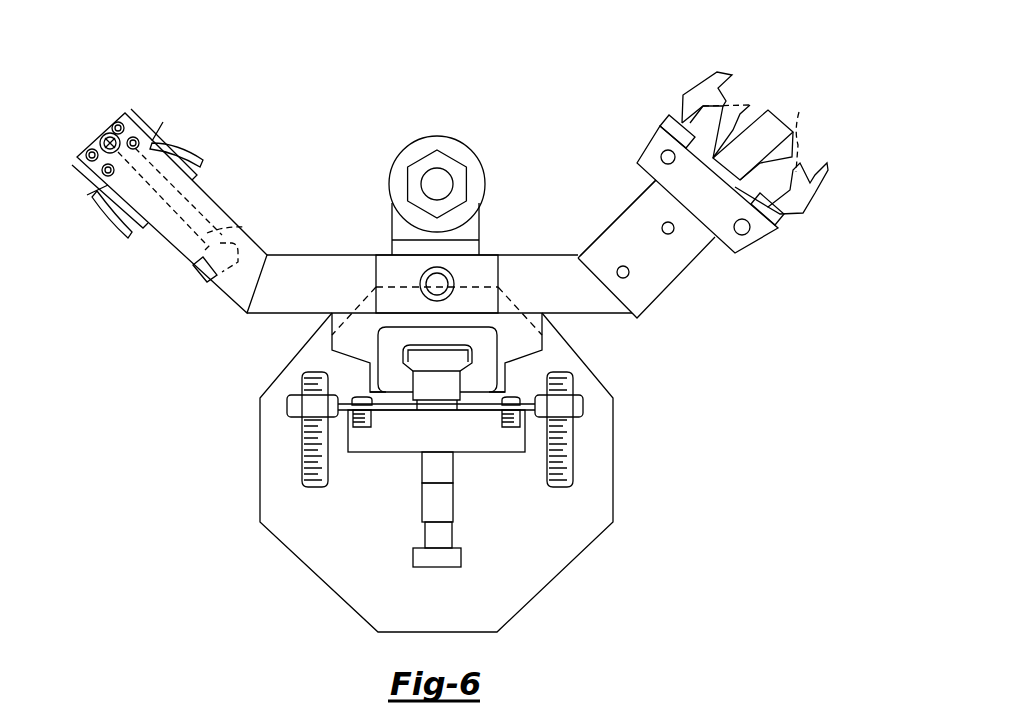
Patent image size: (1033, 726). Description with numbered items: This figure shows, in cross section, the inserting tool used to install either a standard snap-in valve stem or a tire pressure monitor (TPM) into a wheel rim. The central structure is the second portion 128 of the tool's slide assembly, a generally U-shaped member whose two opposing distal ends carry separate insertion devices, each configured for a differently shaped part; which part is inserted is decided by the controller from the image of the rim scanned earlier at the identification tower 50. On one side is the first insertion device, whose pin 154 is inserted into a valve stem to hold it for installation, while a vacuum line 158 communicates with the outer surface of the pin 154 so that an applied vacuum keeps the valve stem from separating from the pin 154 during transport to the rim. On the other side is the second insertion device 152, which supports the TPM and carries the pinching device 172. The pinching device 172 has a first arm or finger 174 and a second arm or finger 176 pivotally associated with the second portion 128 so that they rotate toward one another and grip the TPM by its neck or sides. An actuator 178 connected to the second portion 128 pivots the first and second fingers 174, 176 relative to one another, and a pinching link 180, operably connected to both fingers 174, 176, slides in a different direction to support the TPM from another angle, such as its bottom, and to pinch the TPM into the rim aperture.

The identification tower 50 is at (217, 206).
The second portion 128 is at (327, 268).
The second insertion device 152 is at (673, 273).
The pin 154 is at (112, 133).
The vacuum line 158 is at (243, 228).
The pinching device 172 is at (654, 165).
The first arm or finger 174 is at (700, 90).
The second arm or finger 176 is at (816, 225).
The actuator 178 is at (611, 231).
The pinching link 180 is at (775, 123).